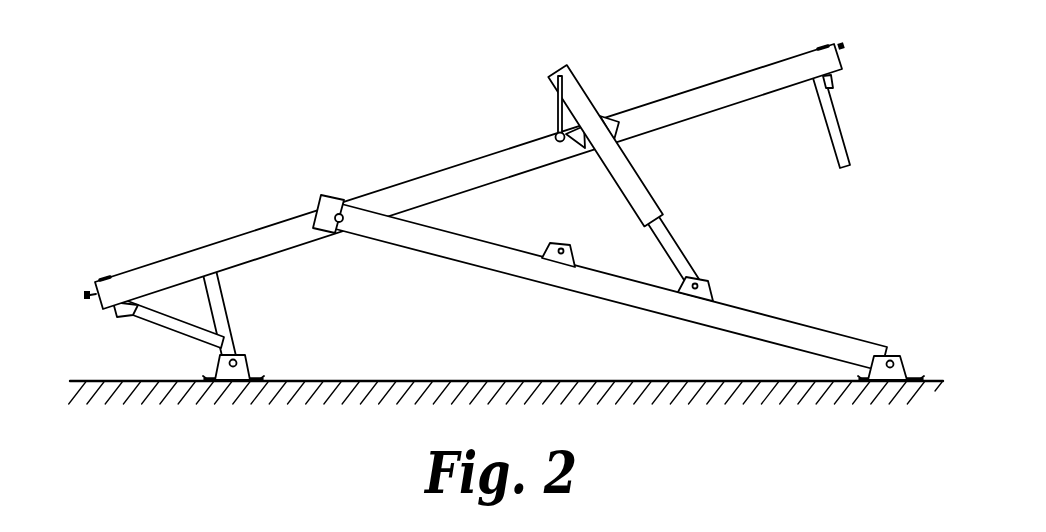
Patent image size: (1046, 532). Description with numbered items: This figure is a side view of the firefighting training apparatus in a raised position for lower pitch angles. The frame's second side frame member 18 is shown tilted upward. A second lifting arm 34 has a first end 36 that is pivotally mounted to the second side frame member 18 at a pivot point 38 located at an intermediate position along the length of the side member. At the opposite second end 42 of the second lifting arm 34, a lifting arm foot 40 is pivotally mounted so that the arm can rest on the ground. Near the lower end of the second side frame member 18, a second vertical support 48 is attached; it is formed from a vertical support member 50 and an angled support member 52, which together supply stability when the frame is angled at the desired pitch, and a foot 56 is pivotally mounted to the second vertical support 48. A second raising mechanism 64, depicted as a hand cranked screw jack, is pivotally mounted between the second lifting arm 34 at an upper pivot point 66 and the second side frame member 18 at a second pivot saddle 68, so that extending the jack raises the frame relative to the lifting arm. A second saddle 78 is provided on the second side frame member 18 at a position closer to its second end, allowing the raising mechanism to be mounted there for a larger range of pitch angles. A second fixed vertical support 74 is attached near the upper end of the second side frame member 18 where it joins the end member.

The second side frame member 18 is at (463, 177).
The second lifting arm 34 is at (615, 288).
The first end 36 is at (330, 207).
The pivot point 38 is at (341, 224).
The lifting arm foot 40 is at (902, 368).
The second end 42 is at (887, 347).
The second vertical support 48 is at (167, 351).
The vertical support member 50 is at (225, 313).
The angled support member 52 is at (155, 325).
The foot 56 is at (240, 373).
The second raising mechanism 64 is at (645, 202).
The upper pivot point 66 is at (600, 130).
The second pivot saddle 68 is at (712, 280).
The second fixed vertical support 74 is at (842, 131).
The second saddle 78 is at (558, 243).